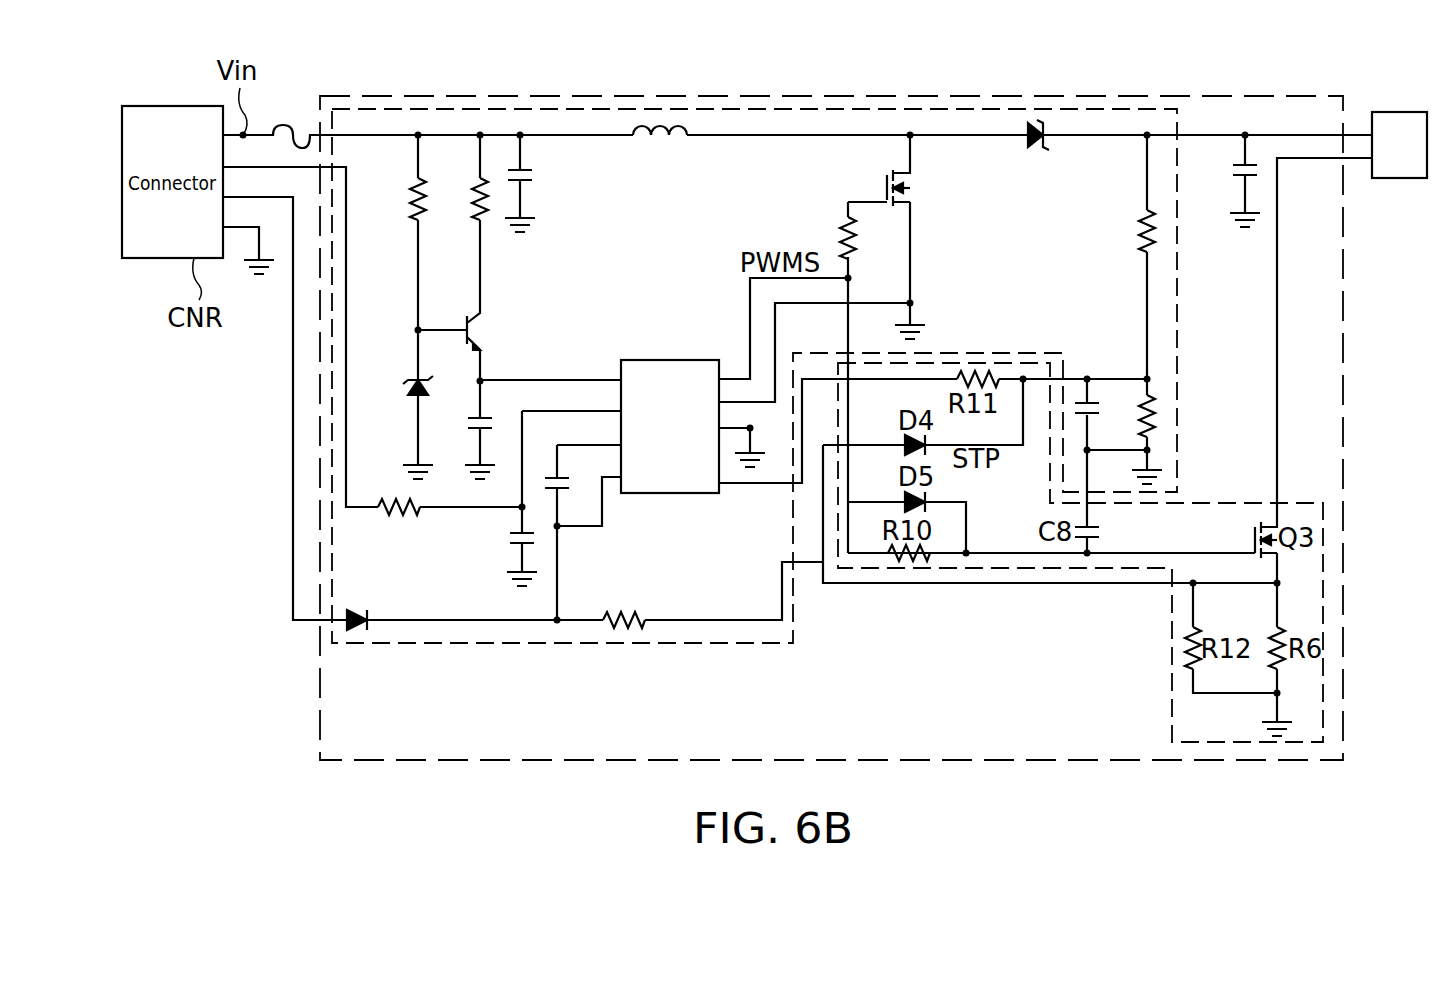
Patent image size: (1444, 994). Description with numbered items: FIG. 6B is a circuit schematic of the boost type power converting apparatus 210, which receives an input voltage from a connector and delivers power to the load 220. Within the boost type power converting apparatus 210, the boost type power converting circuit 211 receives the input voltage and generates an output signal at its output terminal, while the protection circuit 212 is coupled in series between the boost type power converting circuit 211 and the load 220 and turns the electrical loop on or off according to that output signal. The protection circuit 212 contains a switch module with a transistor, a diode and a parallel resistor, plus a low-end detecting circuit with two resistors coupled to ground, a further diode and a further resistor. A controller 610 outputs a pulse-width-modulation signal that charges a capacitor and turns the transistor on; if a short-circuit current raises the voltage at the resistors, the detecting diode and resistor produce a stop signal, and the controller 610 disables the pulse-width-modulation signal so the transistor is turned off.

The boost type power converting apparatus 210 is at (1305, 88).
The boost type power converting circuit 211 is at (580, 107).
The protection circuit 212 is at (1220, 502).
The load 220 is at (1395, 108).
The controller 610 is at (676, 358).